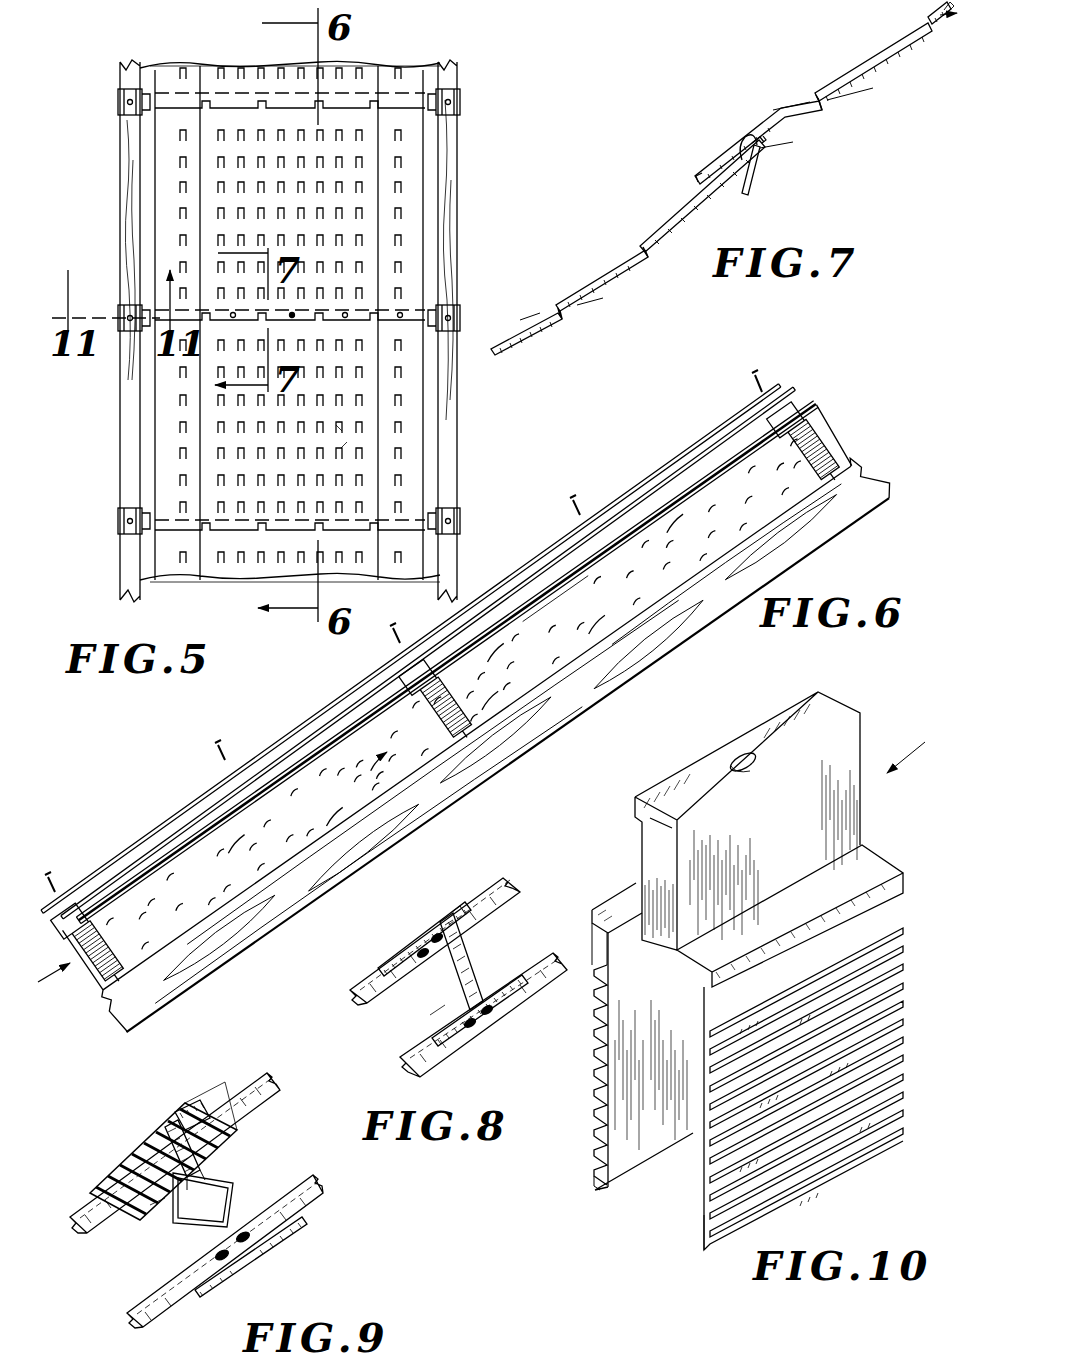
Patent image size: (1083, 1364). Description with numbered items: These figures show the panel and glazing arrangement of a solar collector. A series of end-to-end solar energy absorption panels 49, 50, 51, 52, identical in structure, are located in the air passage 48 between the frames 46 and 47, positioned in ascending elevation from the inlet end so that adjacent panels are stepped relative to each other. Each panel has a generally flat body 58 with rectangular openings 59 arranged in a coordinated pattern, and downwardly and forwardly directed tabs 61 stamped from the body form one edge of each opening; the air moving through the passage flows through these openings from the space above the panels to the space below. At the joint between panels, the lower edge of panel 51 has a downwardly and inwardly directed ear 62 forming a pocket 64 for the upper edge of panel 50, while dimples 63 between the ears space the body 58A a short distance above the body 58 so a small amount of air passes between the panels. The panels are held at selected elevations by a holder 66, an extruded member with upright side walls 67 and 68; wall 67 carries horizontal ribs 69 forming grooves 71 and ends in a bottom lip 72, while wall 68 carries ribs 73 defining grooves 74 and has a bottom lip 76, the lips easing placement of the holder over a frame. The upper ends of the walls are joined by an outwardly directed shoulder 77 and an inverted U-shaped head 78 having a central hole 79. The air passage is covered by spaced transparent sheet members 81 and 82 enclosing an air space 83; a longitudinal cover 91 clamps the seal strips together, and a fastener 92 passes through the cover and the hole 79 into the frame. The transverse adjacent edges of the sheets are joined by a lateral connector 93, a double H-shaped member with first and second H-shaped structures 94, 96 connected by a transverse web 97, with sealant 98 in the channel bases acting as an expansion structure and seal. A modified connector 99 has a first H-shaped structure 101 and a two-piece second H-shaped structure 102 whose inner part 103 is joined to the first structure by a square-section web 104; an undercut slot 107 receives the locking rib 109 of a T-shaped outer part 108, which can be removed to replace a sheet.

In FIG. 5, the frame 46 is at (128, 437).
In FIG. 5, the frame 47 is at (443, 443).
In FIG. 6, the air passage 48 is at (556, 599).
In FIG. 5, the solar energy absorption panel 49 is at (394, 574).
In FIG. 6, the solar energy absorption panel 49 is at (213, 873).
In FIG. 5, the solar energy absorption panel 50 is at (428, 402).
In FIG. 7, the solar energy absorption panel 50 is at (572, 290).
In FIG. 6, the solar energy absorption panel 50 is at (459, 696).
In FIG. 5, the solar energy absorption panel 51 is at (430, 182).
In FIG. 7, the solar energy absorption panel 51 is at (847, 65).
In FIG. 6, the solar energy absorption panel 51 is at (707, 528).
In FIG. 5, the solar energy absorption panel 52 is at (406, 70).
In FIG. 6, the solar energy absorption panel 52 is at (494, 740).
In FIG. 7, the body 58 is at (612, 265).
In FIG. 7, the body 58A is at (712, 178).
In FIG. 5, the openings 59 is at (343, 450).
In FIG. 7, the openings 59 is at (643, 250).
In FIG. 6, the openings 59 is at (360, 773).
In FIG. 7, the tabs 61 is at (642, 263).
In FIG. 7, the ear 62 is at (751, 183).
In FIG. 5, the dimples 63 is at (294, 318).
In FIG. 7, the dimples 63 is at (742, 153).
In FIG. 7, the pocket 64 is at (758, 142).
In FIG. 5, the holder 66 is at (117, 100).
In FIG. 6, the holder 66 is at (447, 697).
In FIG. 10, the holder 66 is at (915, 750).
In FIG. 10, the side wall 67 is at (643, 1133).
In FIG. 10, the side wall 68 is at (700, 1212).
In FIG. 10, the ribs 69 is at (596, 1095).
In FIG. 10, the grooves 71 is at (593, 1000).
In FIG. 10, the lip 72 is at (596, 1188).
In FIG. 10, the ribs 73 is at (912, 967).
In FIG. 10, the grooves 74 is at (907, 1070).
In FIG. 10, the lip 76 is at (876, 1150).
In FIG. 10, the shoulder 77 is at (620, 897).
In FIG. 10, the head 78 is at (637, 826).
In FIG. 10, the hole 79 is at (742, 756).
In FIG. 6, the transparent sheet member 81 is at (427, 653).
In FIG. 8, the transparent sheet member 81 is at (353, 983).
In FIG. 9, the transparent sheet member 81 is at (96, 1205).
In FIG. 6, the transparent sheet member 82 is at (447, 662).
In FIG. 8, the transparent sheet member 82 is at (406, 1060).
In FIG. 9, the transparent sheet member 82 is at (192, 1318).
In FIG. 8, the air space 83 is at (398, 1025).
In FIG. 6, the cover 91 is at (410, 648).
In FIG. 6, the fastener 92 is at (755, 388).
In FIG. 8, the lateral connector 93 is at (384, 948).
In FIG. 8, the first H-shaped structure 94 is at (452, 913).
In FIG. 8, the second H-shaped structure 96 is at (462, 1050).
In FIG. 8, the transverse web 97 is at (463, 968).
In FIG. 8, the sealant 98 is at (419, 949).
In FIG. 9, the lateral connector 99 is at (219, 1088).
In FIG. 9, the first H-shaped structure 101 is at (253, 1255).
In FIG. 9, the second H-shaped structure 102 is at (103, 1153).
In FIG. 9, the inner part 103 is at (160, 1213).
In FIG. 9, the web 104 is at (218, 1188).
In FIG. 9, the undercut slot 107 is at (182, 1195).
In FIG. 9, the T-shaped part 108 is at (188, 1112).
In FIG. 9, the locking rib 109 is at (166, 1140).